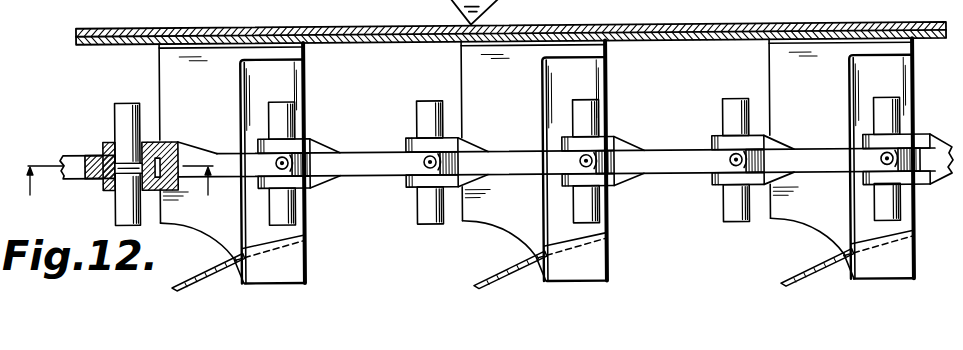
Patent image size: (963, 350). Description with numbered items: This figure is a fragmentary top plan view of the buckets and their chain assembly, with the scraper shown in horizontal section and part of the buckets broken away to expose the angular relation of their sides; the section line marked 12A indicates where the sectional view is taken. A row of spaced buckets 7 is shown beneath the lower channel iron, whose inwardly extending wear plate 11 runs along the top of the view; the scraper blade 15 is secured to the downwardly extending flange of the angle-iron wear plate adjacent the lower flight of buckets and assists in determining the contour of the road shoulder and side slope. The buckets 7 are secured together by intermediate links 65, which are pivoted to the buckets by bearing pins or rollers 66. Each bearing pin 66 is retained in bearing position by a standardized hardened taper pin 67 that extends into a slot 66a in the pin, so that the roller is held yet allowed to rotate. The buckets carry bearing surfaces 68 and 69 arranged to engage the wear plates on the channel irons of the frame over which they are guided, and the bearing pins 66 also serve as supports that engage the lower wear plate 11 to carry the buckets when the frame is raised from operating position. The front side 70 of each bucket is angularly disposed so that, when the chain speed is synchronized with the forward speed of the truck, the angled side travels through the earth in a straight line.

The bucket 7 is at (306, 118).
The wear plate 11 is at (767, 33).
The scraper blade 15 is at (702, 28).
The intermediate link 65 is at (72, 160).
The bearing pin 66 is at (125, 110).
The slot 66a is at (137, 166).
The taper pin 67 is at (157, 143).
The bearing surface 68 is at (592, 48).
The bearing surface 69 is at (603, 259).
The front side 70 is at (210, 272).
The section line 12A is at (120, 187).